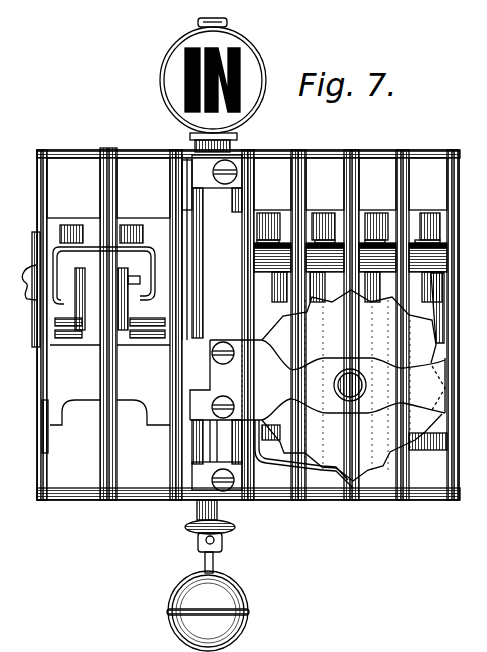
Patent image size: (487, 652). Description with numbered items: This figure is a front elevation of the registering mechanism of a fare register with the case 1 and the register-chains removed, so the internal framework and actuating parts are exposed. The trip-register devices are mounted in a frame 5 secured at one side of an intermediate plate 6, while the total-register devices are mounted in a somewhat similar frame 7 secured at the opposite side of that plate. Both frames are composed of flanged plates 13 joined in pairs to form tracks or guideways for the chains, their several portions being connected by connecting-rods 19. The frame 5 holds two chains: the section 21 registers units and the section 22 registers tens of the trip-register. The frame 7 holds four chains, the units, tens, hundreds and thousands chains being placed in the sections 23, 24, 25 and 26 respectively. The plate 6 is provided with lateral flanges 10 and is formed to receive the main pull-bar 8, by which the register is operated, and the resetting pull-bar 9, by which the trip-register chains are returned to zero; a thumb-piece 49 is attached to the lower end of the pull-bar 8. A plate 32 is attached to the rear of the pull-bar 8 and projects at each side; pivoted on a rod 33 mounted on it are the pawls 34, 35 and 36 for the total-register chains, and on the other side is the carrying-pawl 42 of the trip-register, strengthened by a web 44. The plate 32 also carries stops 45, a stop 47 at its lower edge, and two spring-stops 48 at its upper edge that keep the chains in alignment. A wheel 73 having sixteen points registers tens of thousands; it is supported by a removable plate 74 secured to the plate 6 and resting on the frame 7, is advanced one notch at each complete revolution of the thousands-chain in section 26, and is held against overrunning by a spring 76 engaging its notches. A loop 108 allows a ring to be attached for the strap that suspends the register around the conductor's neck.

The case 1 is at (452, 470).
The frame 5 is at (148, 440).
The intermediate plate 6 is at (217, 372).
The frame 7 is at (415, 455).
The pull-bar 8 is at (230, 520).
The resetting pull-bar 9 is at (238, 141).
The lateral flanges 10 is at (198, 238).
The flanged plates 13 is at (110, 150).
The connecting-rods 19 is at (136, 152).
The section 21 is at (143, 188).
The section 22 is at (73, 188).
The section 23 is at (428, 184).
The section 24 is at (377, 184).
The section 25 is at (325, 184).
The section 26 is at (272, 184).
The plate 32 is at (462, 348).
The rod 33 is at (274, 282).
The pawl 34 is at (318, 280).
The pawl 35 is at (428, 278).
The pawl 36 is at (372, 280).
The carrying-pawl 42 is at (150, 250).
The web 44 is at (93, 345).
The stops 45 is at (334, 232).
The stop 47 is at (135, 360).
The spring-stops 48 is at (102, 226).
The thumb-piece 49 is at (240, 586).
The tens-of-thousands wheel 73 is at (367, 347).
The plate 74 is at (361, 385).
The spring 76 is at (268, 462).
The loop 108 is at (56, 258).